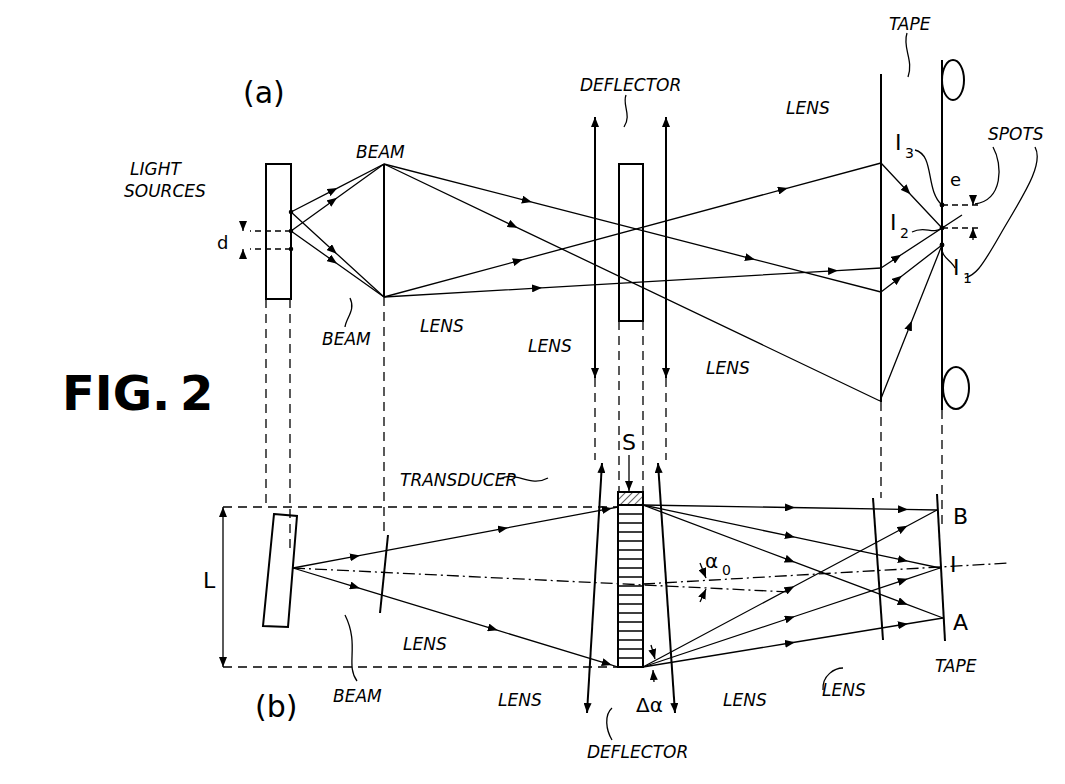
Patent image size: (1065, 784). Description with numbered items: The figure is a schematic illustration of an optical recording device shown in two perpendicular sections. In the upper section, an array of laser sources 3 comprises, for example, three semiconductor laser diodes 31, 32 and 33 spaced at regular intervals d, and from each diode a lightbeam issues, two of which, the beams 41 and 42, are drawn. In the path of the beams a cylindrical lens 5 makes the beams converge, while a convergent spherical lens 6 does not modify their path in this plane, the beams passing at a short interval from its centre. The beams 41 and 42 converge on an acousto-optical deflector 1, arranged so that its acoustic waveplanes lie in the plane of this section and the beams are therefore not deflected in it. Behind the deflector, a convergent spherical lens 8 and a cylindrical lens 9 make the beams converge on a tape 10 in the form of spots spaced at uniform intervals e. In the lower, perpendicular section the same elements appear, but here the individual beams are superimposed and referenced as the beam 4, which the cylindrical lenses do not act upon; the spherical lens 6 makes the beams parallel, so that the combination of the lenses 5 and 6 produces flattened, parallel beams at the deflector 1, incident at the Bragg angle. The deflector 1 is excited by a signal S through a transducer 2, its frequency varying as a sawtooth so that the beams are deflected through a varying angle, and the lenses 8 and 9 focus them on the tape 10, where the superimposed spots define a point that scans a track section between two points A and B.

The acousto-optical deflector 1 is at (627, 164).
The transducer 2 is at (618, 493).
The array of laser sources 3 is at (291, 292).
The semiconductor laser diode 31 is at (192, 172).
The semiconductor laser diode 32 is at (291, 231).
The semiconductor laser diode 33 is at (157, 199).
The beam 4 is at (343, 582).
The lightbeam 41 is at (342, 190).
The lightbeam 42 is at (320, 250).
The cylindrical lens 5 is at (386, 295).
The convergent spherical lens 6 is at (593, 323).
The convergent spherical lens 8 is at (668, 356).
The cylindrical lens 9 is at (881, 118).
The tape 10 is at (942, 123).